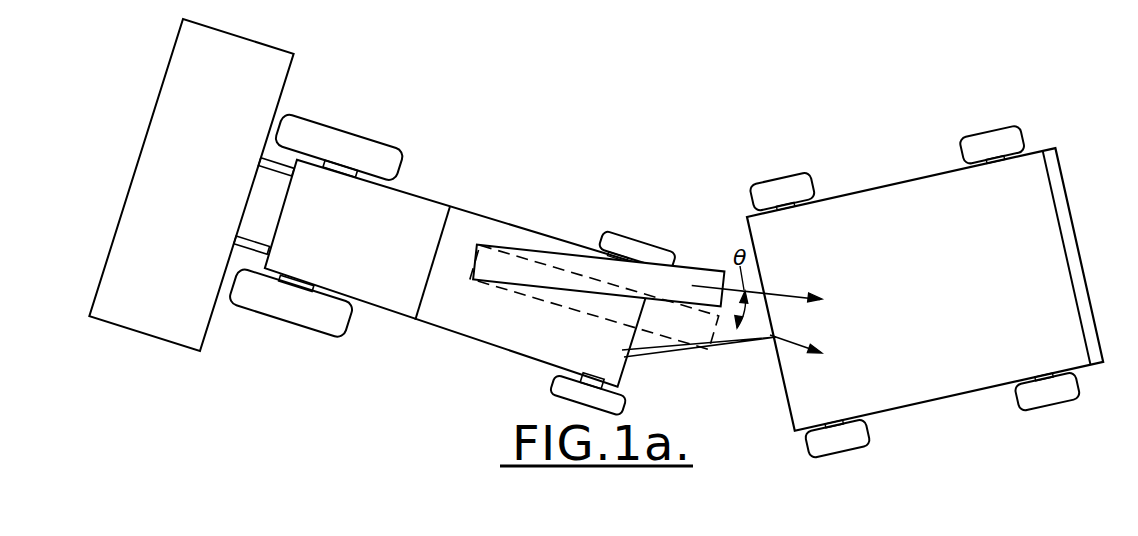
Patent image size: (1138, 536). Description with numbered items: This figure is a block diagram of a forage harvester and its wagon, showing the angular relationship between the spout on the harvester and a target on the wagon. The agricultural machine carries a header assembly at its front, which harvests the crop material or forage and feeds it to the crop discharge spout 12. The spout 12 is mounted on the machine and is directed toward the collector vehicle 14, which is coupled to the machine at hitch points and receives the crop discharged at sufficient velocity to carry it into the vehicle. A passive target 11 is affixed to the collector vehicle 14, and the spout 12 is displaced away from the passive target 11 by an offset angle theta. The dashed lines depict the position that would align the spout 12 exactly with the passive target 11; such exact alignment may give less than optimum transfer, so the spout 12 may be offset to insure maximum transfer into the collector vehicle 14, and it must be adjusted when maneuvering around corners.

The passive target 11 is at (776, 337).
The crop discharge spout 12 is at (697, 268).
The collector vehicle 14 is at (900, 183).